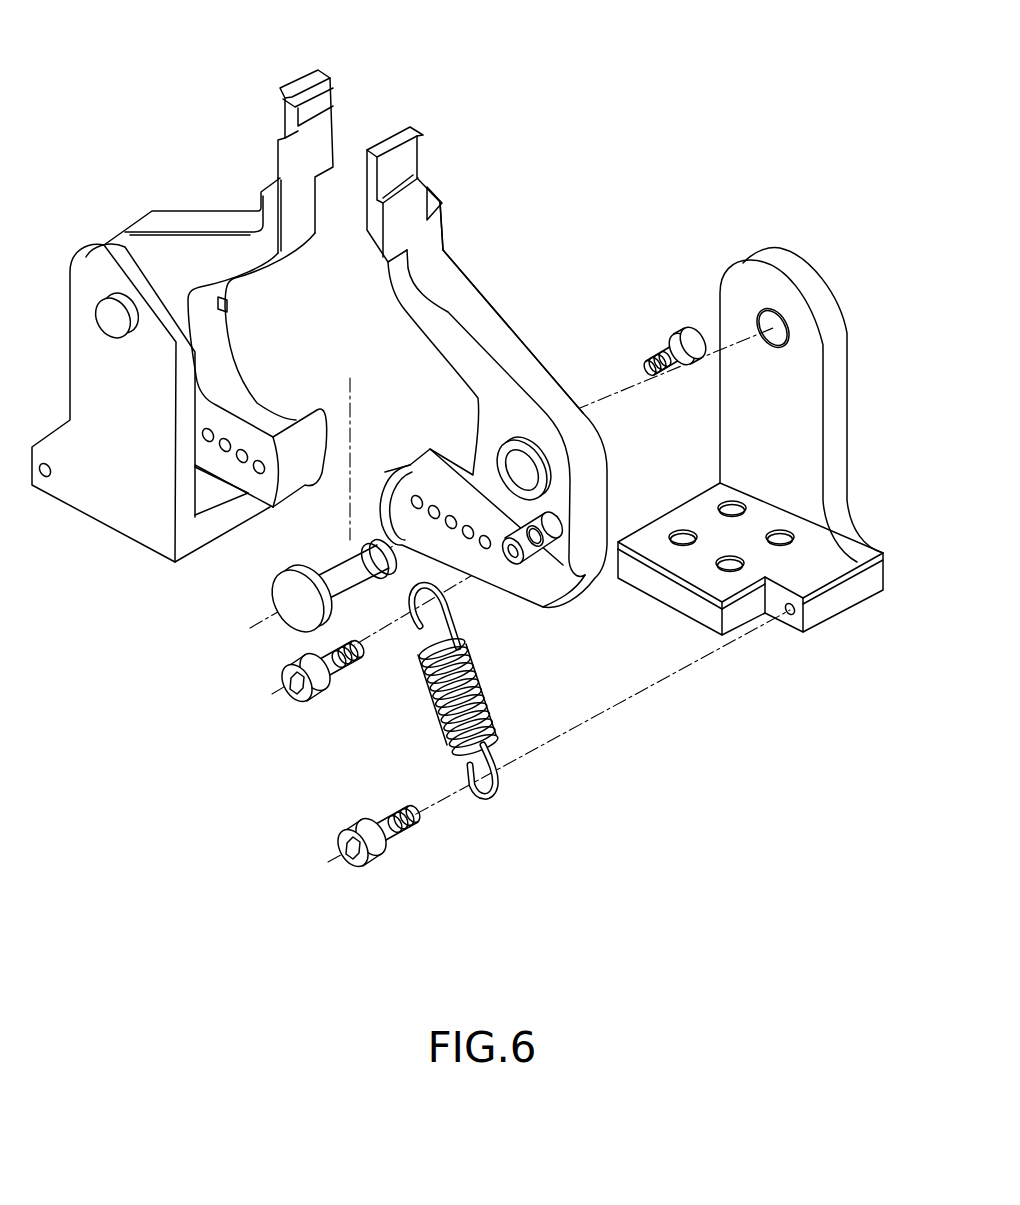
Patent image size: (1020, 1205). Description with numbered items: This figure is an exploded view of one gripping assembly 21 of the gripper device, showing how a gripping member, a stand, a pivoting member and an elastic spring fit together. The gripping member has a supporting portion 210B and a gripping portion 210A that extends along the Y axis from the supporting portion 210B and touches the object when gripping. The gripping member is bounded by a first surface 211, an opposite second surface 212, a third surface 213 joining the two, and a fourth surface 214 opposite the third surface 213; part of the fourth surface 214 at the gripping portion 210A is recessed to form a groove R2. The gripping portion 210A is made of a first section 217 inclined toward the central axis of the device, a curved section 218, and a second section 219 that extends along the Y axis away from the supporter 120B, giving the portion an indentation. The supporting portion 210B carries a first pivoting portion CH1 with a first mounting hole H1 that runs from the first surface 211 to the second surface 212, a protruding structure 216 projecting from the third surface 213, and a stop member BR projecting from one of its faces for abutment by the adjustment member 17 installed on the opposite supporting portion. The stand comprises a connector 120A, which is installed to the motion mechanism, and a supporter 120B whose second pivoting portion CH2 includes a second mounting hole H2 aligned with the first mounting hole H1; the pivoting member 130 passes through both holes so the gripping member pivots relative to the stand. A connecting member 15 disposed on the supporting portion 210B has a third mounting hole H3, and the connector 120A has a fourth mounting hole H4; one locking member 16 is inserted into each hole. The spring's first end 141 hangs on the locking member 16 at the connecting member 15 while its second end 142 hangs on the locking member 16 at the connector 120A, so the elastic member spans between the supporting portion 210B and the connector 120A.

The gripping assembly 21 is at (113, 197).
The supporting portion 210B is at (210, 347).
The first surface 211 is at (187, 253).
The third surface 213 is at (203, 308).
The fourth surface 214 is at (218, 220).
The protruding structure 216 is at (252, 410).
The groove R2 is at (282, 121).
The pivoting member 130 is at (293, 600).
The connecting member 15 is at (593, 572).
The gripping portion 210A is at (455, 372).
The second surface 212 is at (440, 340).
The first section 217 is at (517, 367).
The curved section 218 is at (433, 265).
The second section 219 is at (408, 215).
The stop member BR is at (393, 473).
The first pivoting portion CH1 is at (545, 470).
The first mounting hole H1 is at (560, 533).
The third mounting hole H3 is at (513, 557).
The adjustment member 17 is at (690, 333).
The supporter 120B is at (833, 428).
The second pivoting portion CH2 is at (787, 327).
The second mounting hole H2 is at (762, 316).
The connector 120A is at (848, 598).
The fourth mounting hole H4 is at (788, 606).
The locking member 16 is at (282, 677).
The first end 141 is at (417, 627).
The second end 142 is at (492, 803).